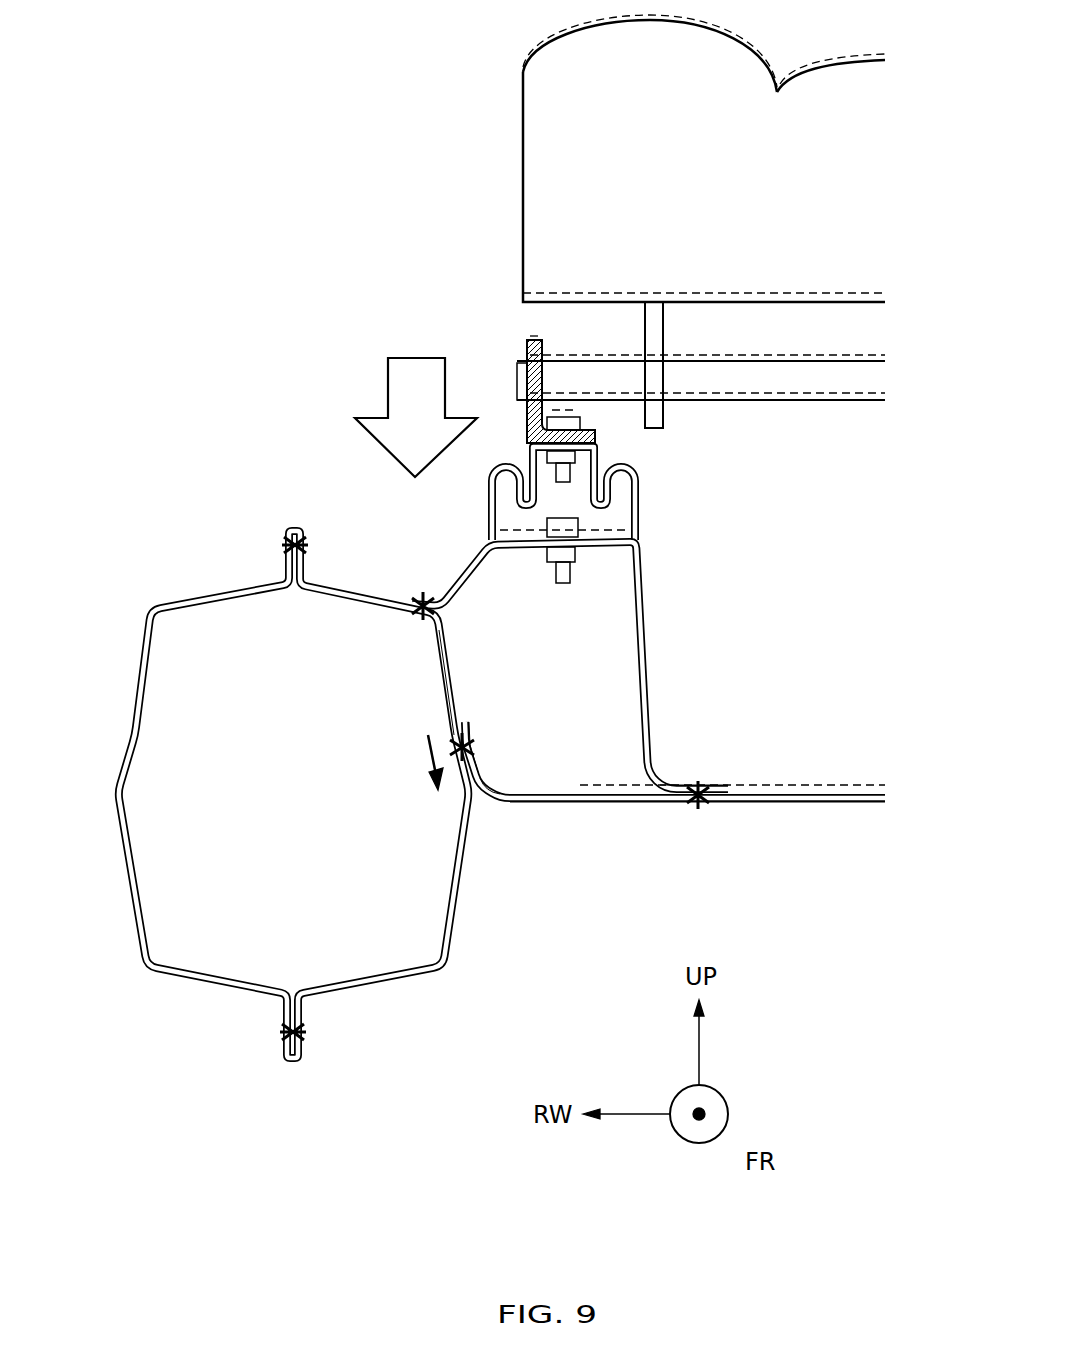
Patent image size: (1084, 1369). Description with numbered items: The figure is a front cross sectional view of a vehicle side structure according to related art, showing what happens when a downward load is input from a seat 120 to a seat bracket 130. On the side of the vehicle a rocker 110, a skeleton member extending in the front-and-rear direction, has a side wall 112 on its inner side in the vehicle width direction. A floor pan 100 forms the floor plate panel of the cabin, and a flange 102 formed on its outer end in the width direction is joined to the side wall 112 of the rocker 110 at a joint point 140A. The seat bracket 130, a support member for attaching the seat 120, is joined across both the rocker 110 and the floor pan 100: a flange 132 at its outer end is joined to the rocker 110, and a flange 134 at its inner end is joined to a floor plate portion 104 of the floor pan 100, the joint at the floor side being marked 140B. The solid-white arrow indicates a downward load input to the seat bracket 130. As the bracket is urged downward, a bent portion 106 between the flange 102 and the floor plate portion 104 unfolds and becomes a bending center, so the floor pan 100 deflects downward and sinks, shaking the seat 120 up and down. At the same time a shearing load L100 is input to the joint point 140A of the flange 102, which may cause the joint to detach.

The floor pan 100 is at (758, 825).
The flange 102 is at (474, 732).
The floor plate portion 104 is at (590, 802).
The bent portion 106 is at (486, 778).
The rocker 110 is at (211, 599).
The side wall 112 is at (452, 660).
The seat 120 is at (520, 196).
The seat bracket 130 is at (648, 632).
The flange 132 is at (430, 597).
The flange 134 is at (717, 786).
The joint point 140A is at (450, 743).
The weld joint between bracket and floor panel 140B is at (697, 787).
The shearing load L100 is at (422, 753).